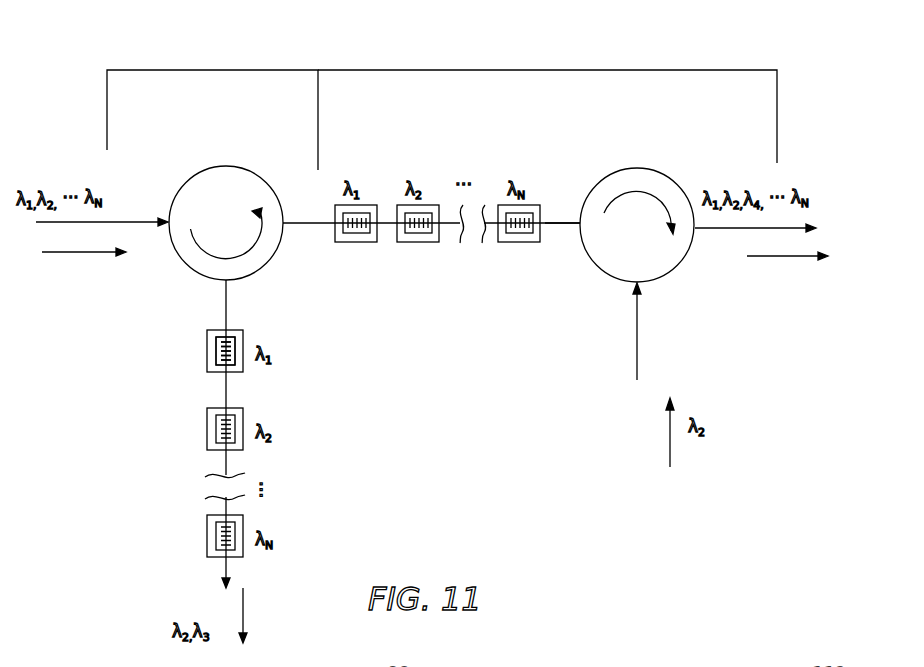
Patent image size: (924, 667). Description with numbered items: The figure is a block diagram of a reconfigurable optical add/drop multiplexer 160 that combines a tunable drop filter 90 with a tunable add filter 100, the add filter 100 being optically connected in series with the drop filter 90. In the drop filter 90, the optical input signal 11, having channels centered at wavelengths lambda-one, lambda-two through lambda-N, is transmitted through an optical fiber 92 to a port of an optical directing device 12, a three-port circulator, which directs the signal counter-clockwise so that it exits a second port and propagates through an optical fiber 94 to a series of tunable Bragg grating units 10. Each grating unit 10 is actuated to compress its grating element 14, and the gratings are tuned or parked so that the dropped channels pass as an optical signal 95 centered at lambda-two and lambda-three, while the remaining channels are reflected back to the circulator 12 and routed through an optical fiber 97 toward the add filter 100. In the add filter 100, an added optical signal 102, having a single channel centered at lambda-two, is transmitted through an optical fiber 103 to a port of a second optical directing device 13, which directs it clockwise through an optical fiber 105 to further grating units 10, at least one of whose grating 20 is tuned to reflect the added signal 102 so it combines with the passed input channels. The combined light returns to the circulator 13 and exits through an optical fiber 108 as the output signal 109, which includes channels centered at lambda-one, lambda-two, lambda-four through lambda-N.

The tunable Bragg grating unit 10 is at (356, 250).
The optical input signal 11 is at (80, 254).
The optical directing device 12 is at (226, 167).
The optical directing device 13 is at (637, 168).
The grating element 14 is at (235, 360).
The grating 20 is at (232, 343).
The tunable drop filter 90 is at (258, 62).
The optical fiber 92 is at (143, 220).
The optical fiber 94 is at (225, 310).
The optical signal 95 is at (243, 613).
The optical fiber 97 is at (300, 222).
The tunable add filter 100 is at (688, 61).
The added optical signal 102 is at (670, 428).
The optical fiber 103 is at (637, 333).
The optical fiber 105 is at (566, 222).
The optical fiber 108 is at (713, 230).
The output signal 109 is at (785, 258).
The reconfigurable optical add/drop multiplexer 160 is at (452, 396).